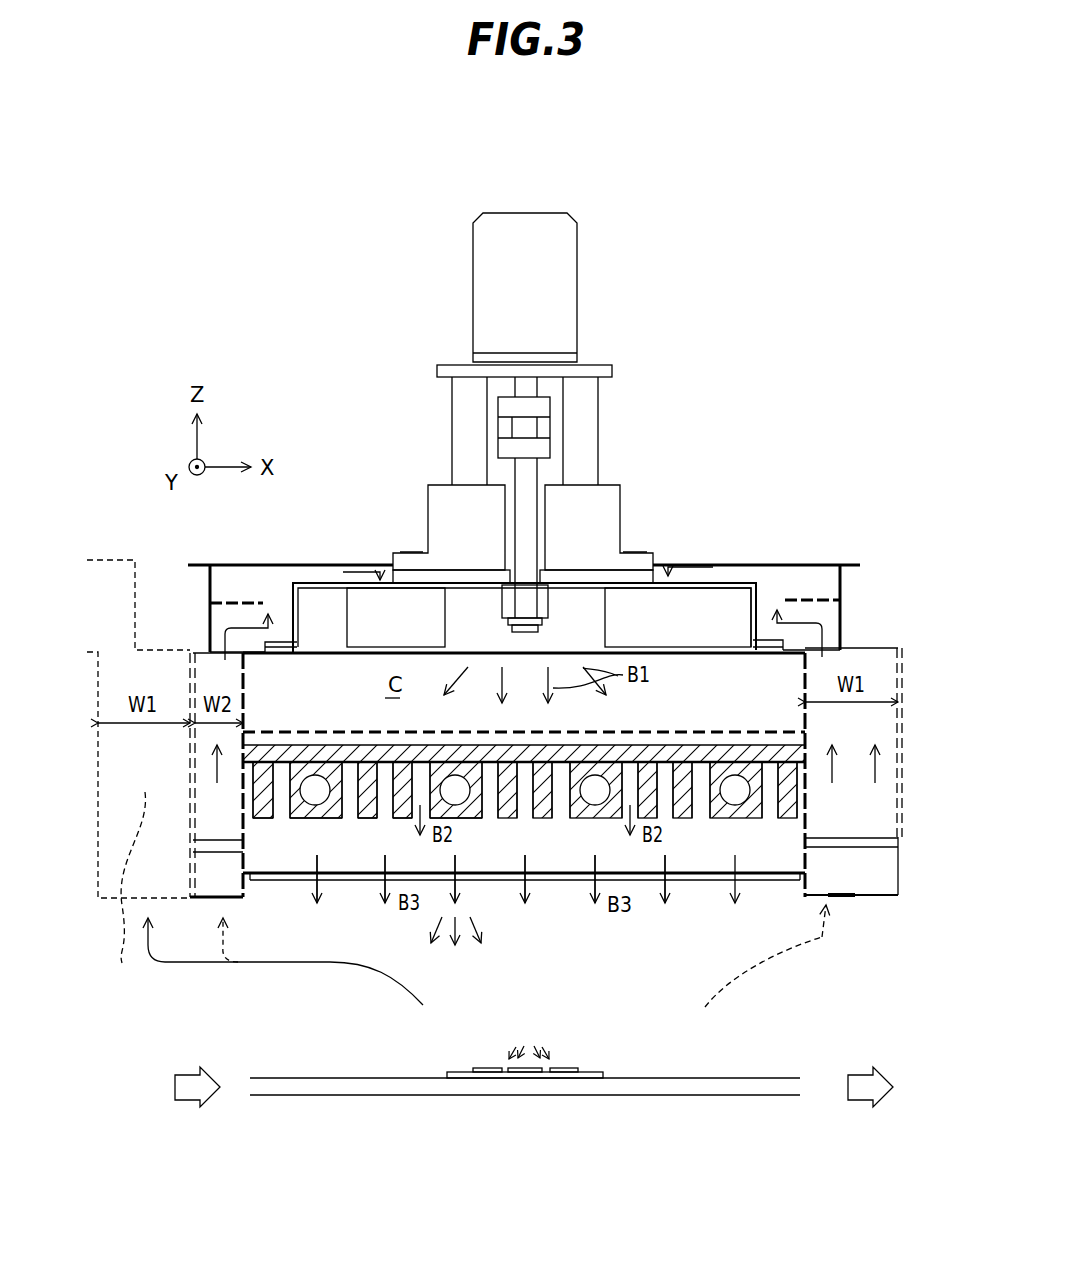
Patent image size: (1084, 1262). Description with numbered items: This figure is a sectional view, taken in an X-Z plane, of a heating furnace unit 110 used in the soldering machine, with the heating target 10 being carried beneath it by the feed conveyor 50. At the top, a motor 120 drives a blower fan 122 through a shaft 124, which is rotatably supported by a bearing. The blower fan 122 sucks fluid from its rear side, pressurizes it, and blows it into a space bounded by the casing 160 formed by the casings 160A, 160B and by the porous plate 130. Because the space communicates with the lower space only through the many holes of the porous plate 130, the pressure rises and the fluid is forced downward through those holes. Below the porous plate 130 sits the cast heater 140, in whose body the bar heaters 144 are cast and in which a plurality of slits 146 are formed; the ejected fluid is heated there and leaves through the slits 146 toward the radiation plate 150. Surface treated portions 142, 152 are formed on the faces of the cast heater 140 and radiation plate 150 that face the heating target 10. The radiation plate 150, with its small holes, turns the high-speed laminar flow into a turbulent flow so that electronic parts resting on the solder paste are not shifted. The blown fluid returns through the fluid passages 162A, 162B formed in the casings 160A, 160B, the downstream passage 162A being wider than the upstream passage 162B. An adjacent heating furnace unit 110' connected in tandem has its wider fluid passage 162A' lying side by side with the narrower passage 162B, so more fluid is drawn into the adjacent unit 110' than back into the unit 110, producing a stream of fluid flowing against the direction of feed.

The heating target 10 is at (593, 1072).
The feed conveyor 50 is at (312, 1078).
The heating furnace unit 110 is at (571, 491).
The adjacent heating furnace unit 110' is at (138, 698).
The motor 120 is at (562, 297).
The blower fan 122 is at (652, 613).
The shaft 124 is at (525, 473).
The porous plate 130 is at (782, 745).
The cast heater 140 is at (753, 800).
The surface treated portion 142 is at (740, 818).
The bar heater 144 is at (315, 790).
The slit 146 is at (352, 813).
The radiation plate 150 is at (757, 876).
The surface treated portion 152 is at (780, 880).
The casing 160 is at (308, 563).
The casing 160A is at (885, 647).
The casing 160B is at (205, 652).
The fluid passage 162A is at (842, 827).
The fluid passage of adjacent heating furnace unit 162A' is at (260, 898).
The fluid passage 162B is at (220, 677).